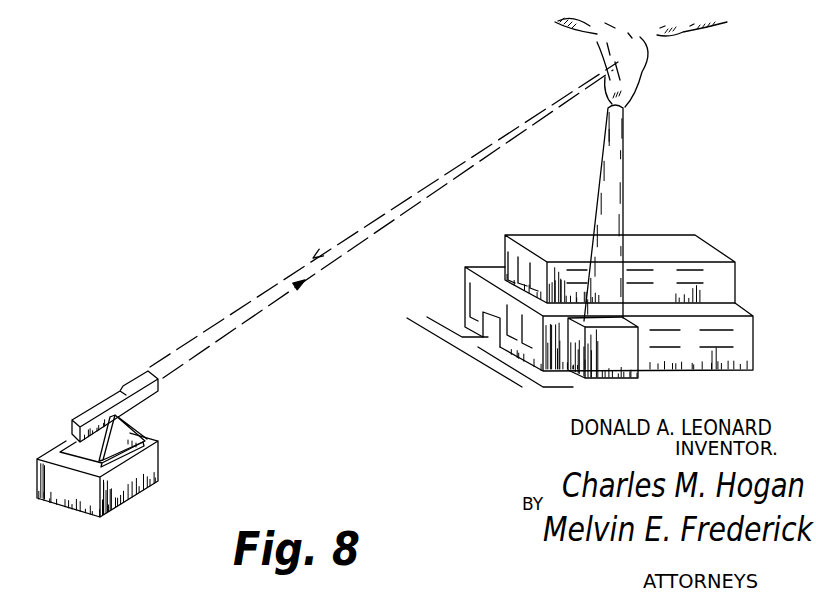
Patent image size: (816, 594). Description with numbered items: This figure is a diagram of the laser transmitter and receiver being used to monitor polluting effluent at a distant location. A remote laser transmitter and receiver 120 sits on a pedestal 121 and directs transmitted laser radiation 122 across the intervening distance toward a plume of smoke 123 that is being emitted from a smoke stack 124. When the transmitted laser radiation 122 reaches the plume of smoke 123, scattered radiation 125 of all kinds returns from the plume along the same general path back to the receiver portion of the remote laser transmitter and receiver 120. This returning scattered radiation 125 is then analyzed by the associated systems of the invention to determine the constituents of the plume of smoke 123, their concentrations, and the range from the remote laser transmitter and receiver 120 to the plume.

The remote laser transmitter and receiver 120 is at (113, 373).
The pedestal 121 is at (160, 458).
The transmitted laser radiation 122 is at (218, 343).
The plume of smoke 123 is at (640, 72).
The smoke stack 124 is at (621, 200).
The scattered radiation 125 is at (282, 280).